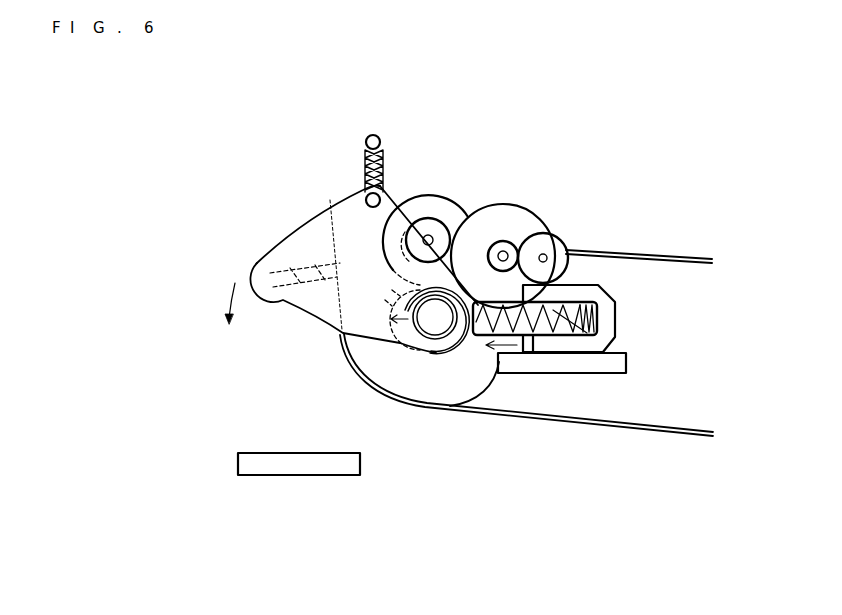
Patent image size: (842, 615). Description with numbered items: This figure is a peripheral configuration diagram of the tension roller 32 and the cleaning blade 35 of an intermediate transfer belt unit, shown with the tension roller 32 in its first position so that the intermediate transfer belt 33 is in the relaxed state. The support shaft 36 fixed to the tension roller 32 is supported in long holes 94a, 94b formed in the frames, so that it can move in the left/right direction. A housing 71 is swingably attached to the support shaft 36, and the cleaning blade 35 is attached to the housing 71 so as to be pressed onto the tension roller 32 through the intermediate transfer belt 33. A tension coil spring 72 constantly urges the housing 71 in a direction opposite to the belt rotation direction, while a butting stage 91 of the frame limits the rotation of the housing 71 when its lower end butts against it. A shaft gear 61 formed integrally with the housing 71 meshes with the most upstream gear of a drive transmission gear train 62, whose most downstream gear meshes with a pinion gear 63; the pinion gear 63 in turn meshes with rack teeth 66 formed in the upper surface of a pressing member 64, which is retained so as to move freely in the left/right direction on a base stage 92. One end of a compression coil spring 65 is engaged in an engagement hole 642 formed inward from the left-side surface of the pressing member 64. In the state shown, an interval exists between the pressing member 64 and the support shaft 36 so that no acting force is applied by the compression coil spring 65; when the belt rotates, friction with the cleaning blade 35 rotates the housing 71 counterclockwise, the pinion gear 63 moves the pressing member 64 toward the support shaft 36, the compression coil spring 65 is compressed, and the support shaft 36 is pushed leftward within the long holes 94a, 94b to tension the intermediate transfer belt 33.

The tension roller 32 is at (413, 372).
The intermediate transfer belt 33 is at (659, 253).
The cleaning blade 35 is at (320, 228).
The support shaft 36 is at (438, 325).
The shaft gear 61 is at (480, 350).
The drive transmission gear train 62 is at (553, 216).
The pinion gear 63 is at (548, 252).
The pressing member 64 is at (612, 313).
The compression coil spring 65 is at (539, 337).
The rack teeth 66 is at (578, 284).
The housing 71 is at (330, 200).
The tension coil spring 72 is at (386, 168).
The butting stage 91 is at (288, 476).
The base stage 92 is at (614, 363).
The long hole 94a is at (395, 332).
The long hole 94b is at (397, 269).
The engagement hole 642 is at (588, 337).